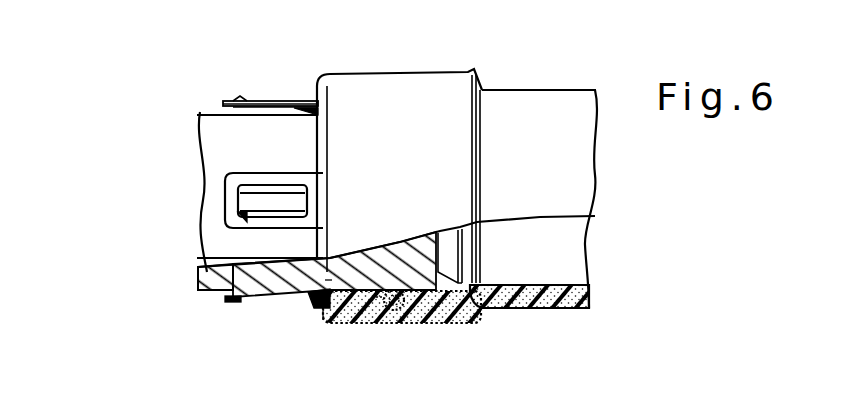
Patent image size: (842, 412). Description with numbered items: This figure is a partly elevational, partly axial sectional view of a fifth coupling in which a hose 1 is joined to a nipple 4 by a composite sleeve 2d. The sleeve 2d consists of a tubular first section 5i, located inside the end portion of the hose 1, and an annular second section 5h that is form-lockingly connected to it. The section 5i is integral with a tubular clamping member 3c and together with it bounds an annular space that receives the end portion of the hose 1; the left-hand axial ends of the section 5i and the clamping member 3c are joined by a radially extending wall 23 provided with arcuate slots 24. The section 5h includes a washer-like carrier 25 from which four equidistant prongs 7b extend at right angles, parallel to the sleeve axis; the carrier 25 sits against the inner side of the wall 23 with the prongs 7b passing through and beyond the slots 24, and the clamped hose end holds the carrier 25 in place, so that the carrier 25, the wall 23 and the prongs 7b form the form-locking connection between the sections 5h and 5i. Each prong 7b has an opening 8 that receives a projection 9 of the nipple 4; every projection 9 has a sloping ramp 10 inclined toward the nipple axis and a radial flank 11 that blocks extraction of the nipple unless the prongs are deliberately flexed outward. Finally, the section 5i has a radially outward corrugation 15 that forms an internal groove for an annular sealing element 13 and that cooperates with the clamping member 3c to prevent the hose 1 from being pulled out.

The hose 1 is at (557, 90).
The composite sleeve 2d is at (328, 266).
The tubular clamping member 3c is at (407, 73).
The nipple 4 is at (199, 111).
The second section 5h is at (308, 302).
The first section 5i is at (368, 280).
The prongs 7b is at (243, 97).
The opening 8 is at (250, 183).
The projection 9 is at (252, 113).
The ramp 10 is at (254, 99).
The radial flank 11 is at (243, 100).
The annular sealing element 13 is at (397, 318).
The corrugation 15 is at (378, 318).
The radially extending wall 23 is at (318, 90).
The arcuate slots 24 is at (327, 322).
The carrier 25 is at (353, 278).